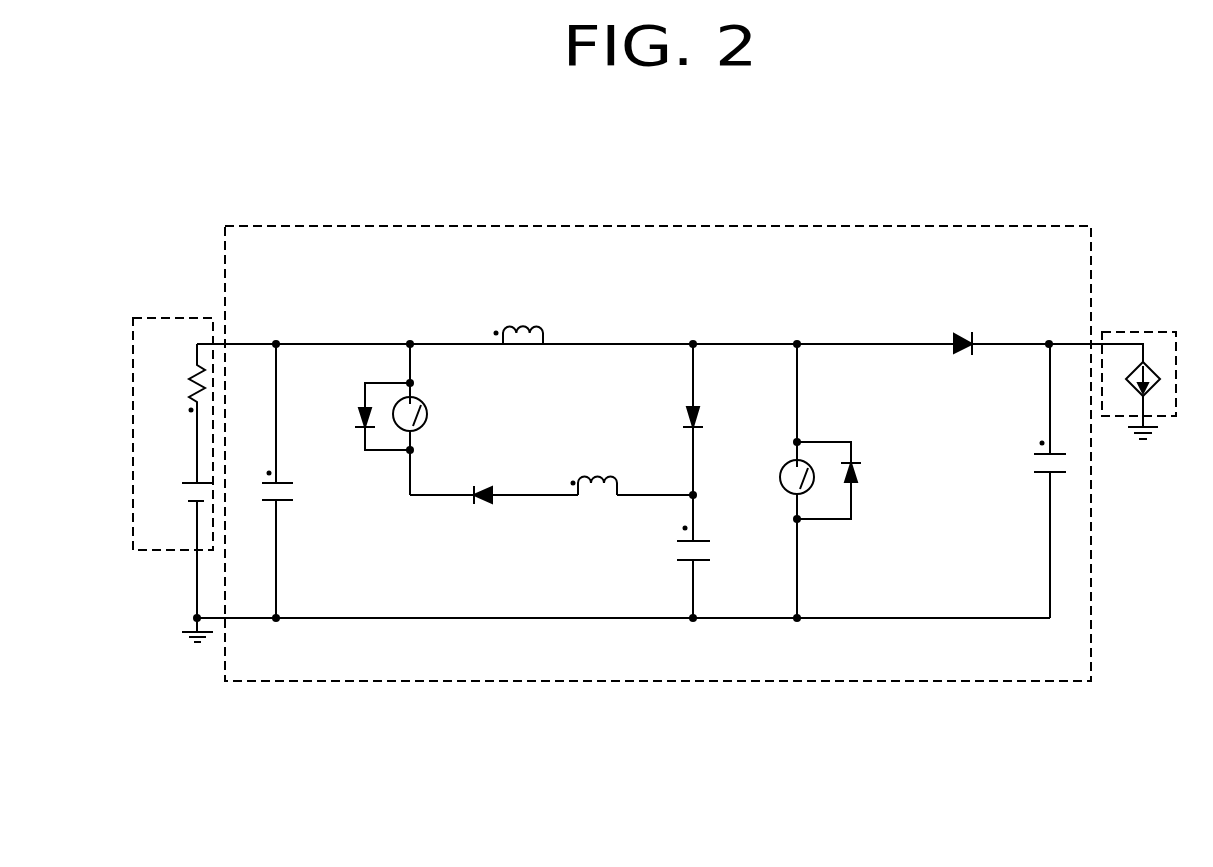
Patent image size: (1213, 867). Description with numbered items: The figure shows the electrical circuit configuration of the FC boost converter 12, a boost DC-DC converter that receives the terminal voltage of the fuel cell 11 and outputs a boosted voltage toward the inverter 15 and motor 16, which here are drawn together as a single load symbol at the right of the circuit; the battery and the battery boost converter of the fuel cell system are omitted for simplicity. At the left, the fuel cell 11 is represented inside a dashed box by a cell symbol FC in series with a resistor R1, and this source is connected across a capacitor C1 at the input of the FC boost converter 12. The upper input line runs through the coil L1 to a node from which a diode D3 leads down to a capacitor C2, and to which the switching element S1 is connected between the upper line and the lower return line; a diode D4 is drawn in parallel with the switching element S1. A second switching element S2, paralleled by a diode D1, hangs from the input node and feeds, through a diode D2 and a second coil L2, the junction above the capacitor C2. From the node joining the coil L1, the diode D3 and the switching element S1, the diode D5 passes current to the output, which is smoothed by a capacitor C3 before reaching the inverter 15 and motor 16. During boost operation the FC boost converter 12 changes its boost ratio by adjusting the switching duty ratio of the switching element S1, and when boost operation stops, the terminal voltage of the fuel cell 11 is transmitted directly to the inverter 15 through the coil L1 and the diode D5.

The fuel cell 11 is at (165, 318).
The FC boost converter 12 is at (950, 226).
The inverter 15 is at (1148, 355).
The motor 16 is at (1132, 332).
The resistor R1 is at (192, 378).
The fuel cell FC is at (180, 548).
The capacitor C1 is at (270, 505).
The capacitor C2 is at (684, 565).
The capacitor C3 is at (1042, 478).
The coil L1 is at (536, 326).
The inductor L2 is at (611, 478).
The switching element S1 is at (789, 492).
The switch S2 is at (432, 414).
The diode D1 is at (357, 418).
The diode D2 is at (481, 503).
The diode D3 is at (700, 420).
The diode D4 is at (858, 460).
The diode D5 is at (982, 340).